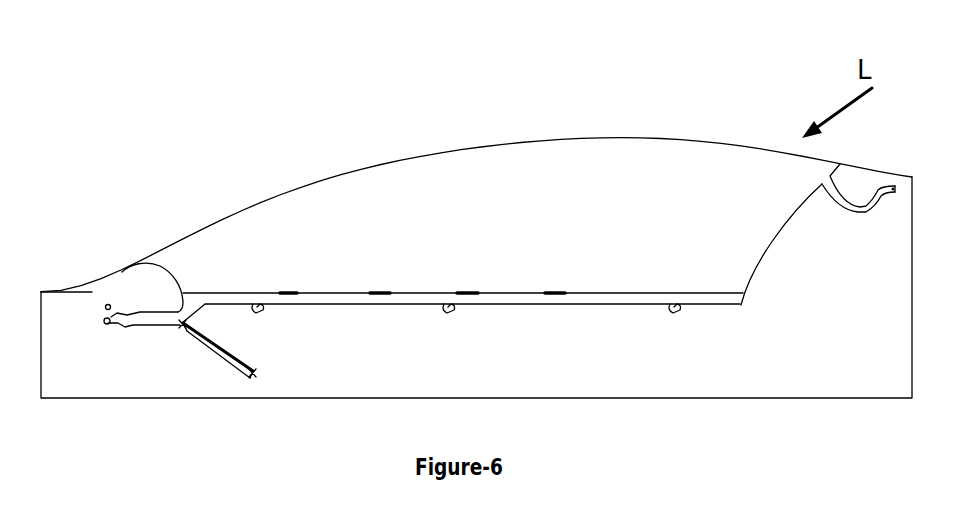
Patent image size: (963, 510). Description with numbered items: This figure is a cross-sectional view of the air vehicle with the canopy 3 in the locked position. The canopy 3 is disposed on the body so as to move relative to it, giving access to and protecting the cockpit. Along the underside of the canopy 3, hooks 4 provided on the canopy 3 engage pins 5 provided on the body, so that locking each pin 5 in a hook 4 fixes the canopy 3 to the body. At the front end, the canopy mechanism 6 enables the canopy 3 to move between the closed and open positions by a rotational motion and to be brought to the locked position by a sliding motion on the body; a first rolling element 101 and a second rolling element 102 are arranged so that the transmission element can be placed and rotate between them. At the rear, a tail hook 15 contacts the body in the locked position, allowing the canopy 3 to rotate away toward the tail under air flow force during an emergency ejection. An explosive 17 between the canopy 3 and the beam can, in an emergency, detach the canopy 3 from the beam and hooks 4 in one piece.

The canopy 3 is at (347, 185).
The explosive 17 is at (462, 292).
The hook 4 is at (451, 311).
The pin 5 is at (680, 311).
The tail hook 15 is at (842, 213).
The second rolling element 102 is at (104, 305).
The first rolling element 101 is at (104, 325).
The canopy mechanism 6 is at (179, 327).